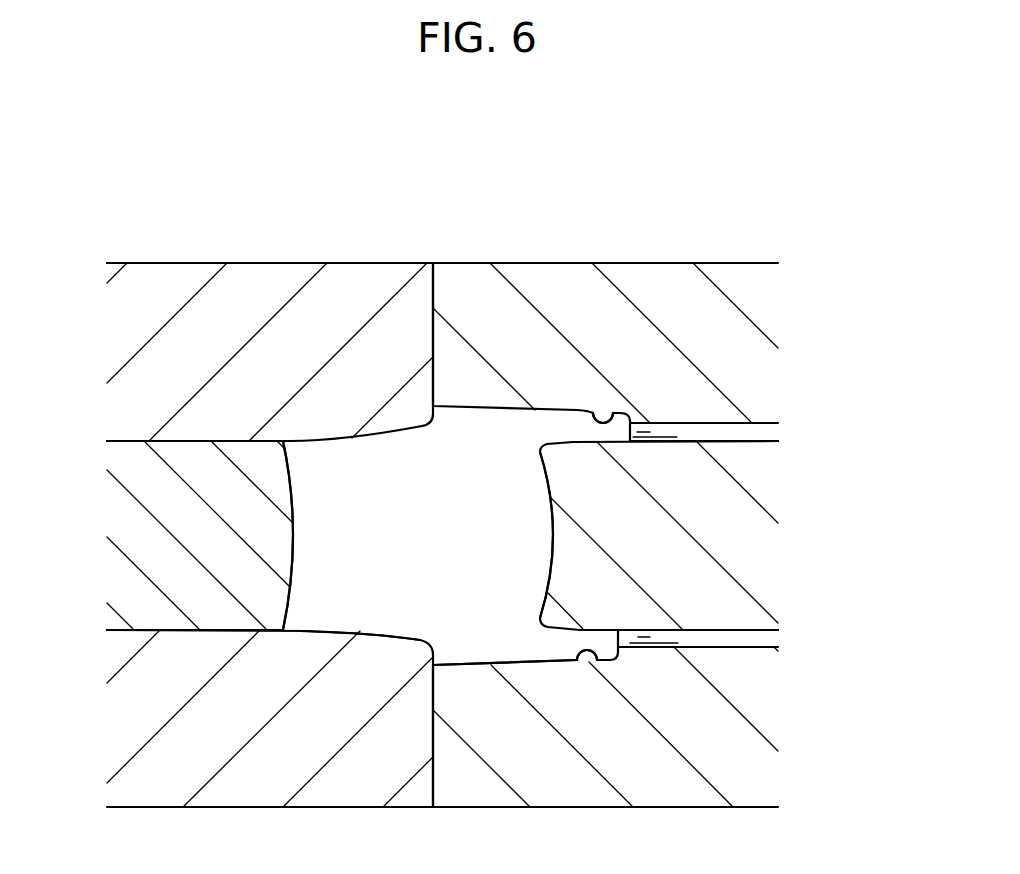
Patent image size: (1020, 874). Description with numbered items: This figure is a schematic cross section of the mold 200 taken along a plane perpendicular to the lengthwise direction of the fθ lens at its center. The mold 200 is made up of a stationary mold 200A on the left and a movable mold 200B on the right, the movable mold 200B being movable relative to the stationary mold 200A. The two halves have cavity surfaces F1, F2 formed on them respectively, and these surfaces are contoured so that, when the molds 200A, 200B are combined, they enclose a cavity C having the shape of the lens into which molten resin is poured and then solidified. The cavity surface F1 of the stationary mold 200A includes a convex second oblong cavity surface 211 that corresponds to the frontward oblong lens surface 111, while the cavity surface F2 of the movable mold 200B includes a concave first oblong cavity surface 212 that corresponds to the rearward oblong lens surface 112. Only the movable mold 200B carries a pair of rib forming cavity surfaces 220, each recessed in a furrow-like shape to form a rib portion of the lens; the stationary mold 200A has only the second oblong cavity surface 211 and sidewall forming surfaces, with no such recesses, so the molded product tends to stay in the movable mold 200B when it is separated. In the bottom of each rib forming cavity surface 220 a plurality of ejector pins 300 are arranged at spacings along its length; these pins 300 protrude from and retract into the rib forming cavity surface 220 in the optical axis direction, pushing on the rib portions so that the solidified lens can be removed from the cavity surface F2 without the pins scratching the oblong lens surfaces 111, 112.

The mold 200 is at (477, 262).
The stationary mold 200A is at (372, 280).
The movable mold 200B is at (558, 280).
The second oblong cavity surface 211 is at (293, 513).
The oblong lens surface 111 is at (293, 513).
The first oblong cavity surface 212 is at (547, 483).
The oblong lens surface 112 is at (547, 483).
The rib forming cavity surface 220 is at (595, 418).
The ejector pin 300 is at (765, 432).
The cavity C is at (431, 548).
The cavity surface F1 is at (367, 632).
The cavity surface F2 is at (492, 666).